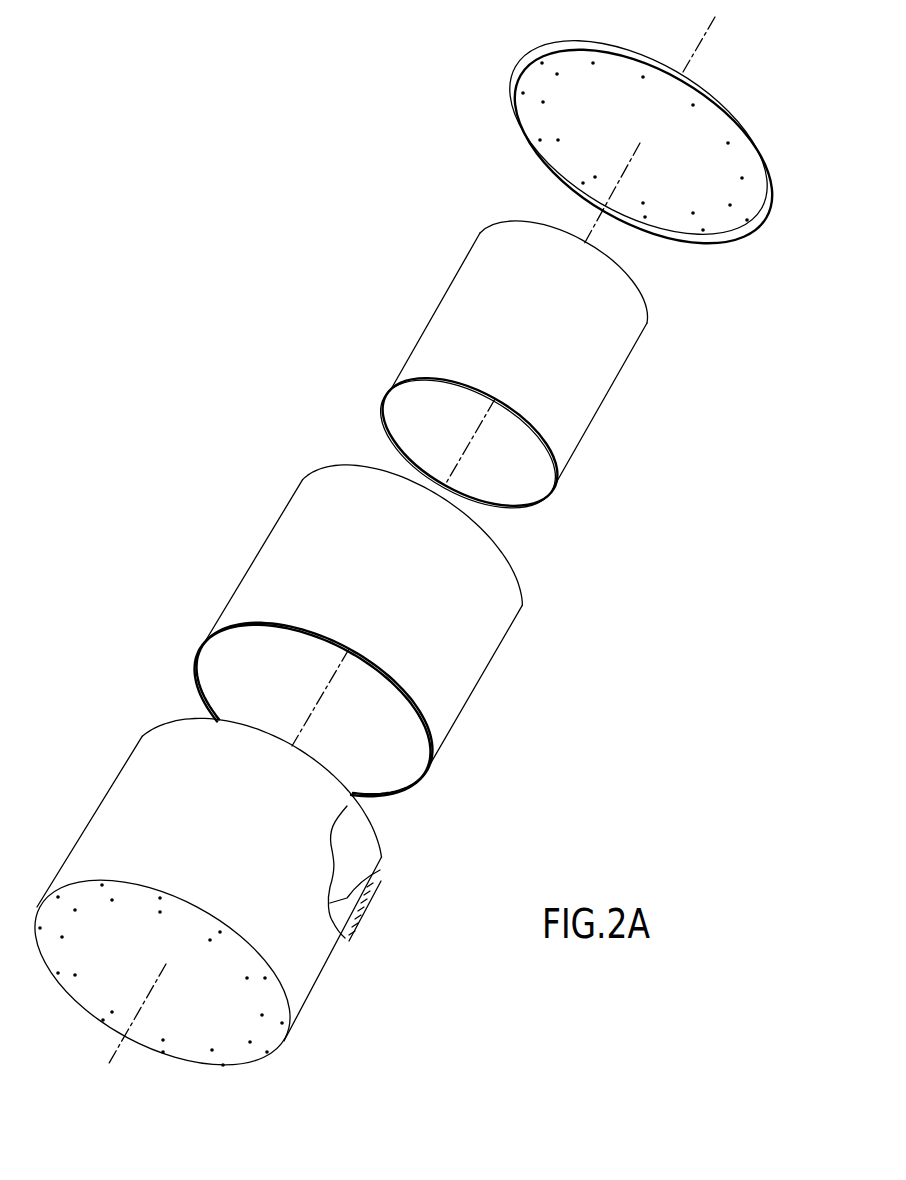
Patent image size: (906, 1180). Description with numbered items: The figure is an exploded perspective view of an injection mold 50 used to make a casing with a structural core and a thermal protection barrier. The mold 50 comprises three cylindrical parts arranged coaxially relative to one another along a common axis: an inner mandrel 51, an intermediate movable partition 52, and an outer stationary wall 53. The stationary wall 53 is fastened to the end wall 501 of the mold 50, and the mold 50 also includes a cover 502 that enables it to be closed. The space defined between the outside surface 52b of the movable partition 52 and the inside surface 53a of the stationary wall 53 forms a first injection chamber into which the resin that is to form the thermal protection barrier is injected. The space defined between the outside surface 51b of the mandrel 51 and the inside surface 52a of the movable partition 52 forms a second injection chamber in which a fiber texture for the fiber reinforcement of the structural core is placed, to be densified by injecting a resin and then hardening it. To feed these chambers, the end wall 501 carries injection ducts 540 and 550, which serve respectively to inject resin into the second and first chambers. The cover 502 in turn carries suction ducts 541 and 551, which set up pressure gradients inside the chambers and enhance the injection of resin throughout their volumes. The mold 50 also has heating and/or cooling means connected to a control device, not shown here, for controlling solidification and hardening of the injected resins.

The injection mold 50 is at (404, 552).
The mandrel 51 is at (520, 377).
The outside surface of the mandrel 51b is at (617, 417).
The movable partition 52 is at (380, 648).
The inside surface of the movable partition 52a is at (398, 772).
The outside surface of the movable partition 52b is at (475, 658).
The stationary wall 53 is at (216, 910).
The inside surface of the stationary wall 53a is at (378, 869).
The end wall 501 is at (190, 1045).
The cover 502 is at (640, 142).
The injection duct 540 is at (262, 1015).
The suction duct 541 is at (643, 78).
The injection duct 550 is at (282, 1024).
The suction duct 551 is at (583, 182).